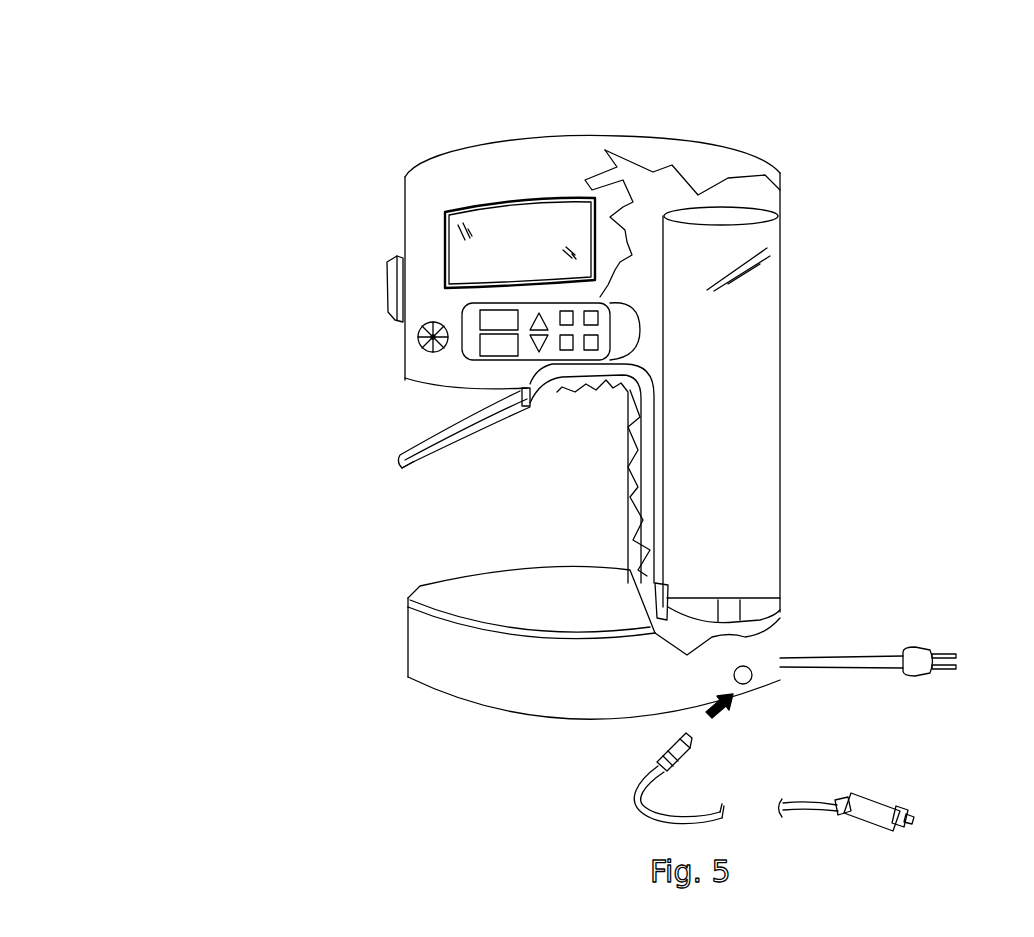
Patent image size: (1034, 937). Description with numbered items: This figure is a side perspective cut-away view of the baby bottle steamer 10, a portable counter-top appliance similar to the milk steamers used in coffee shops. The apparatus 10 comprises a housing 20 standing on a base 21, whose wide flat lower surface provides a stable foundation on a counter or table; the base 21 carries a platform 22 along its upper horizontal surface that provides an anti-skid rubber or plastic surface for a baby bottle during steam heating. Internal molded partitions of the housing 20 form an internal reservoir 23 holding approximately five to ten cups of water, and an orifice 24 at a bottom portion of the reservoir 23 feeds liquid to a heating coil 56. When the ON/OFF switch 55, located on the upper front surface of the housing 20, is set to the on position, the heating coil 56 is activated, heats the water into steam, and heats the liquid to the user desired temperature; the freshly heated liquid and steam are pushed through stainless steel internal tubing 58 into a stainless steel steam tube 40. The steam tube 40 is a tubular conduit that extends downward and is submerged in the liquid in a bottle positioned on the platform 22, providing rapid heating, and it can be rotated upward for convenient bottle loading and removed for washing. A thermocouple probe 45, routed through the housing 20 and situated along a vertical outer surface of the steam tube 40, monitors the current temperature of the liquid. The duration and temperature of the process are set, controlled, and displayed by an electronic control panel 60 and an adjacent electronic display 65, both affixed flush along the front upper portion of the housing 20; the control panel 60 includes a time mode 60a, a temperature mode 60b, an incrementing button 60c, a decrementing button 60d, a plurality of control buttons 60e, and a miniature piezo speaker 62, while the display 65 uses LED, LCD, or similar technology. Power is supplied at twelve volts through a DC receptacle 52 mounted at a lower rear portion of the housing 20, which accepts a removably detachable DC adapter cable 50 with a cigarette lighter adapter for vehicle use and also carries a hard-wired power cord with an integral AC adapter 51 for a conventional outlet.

The baby bottle steamer 10 is at (254, 111).
The housing 20 is at (780, 253).
The base 21 is at (443, 703).
The platform 22 is at (537, 632).
The internal reservoir 23 is at (740, 296).
The orifice 24 is at (738, 590).
The steam tube 40 is at (402, 448).
The thermocouple probe 45 is at (413, 460).
The DC adapter cable 50 is at (850, 802).
The AC adapter 51 is at (875, 658).
The DC receptacle 52 is at (723, 675).
The ON/OFF switch 55 is at (393, 305).
The heating coil 56 is at (712, 620).
The internal tubing 58 is at (653, 503).
The control panel 60 is at (462, 352).
The time mode 60a is at (507, 315).
The temperature mode 60b is at (495, 342).
The incrementing button 60c is at (540, 317).
The decrementing button 60d is at (543, 335).
The control buttons 60e is at (601, 345).
The miniature piezo speaker 62 is at (418, 337).
The electronic display 65 is at (457, 225).